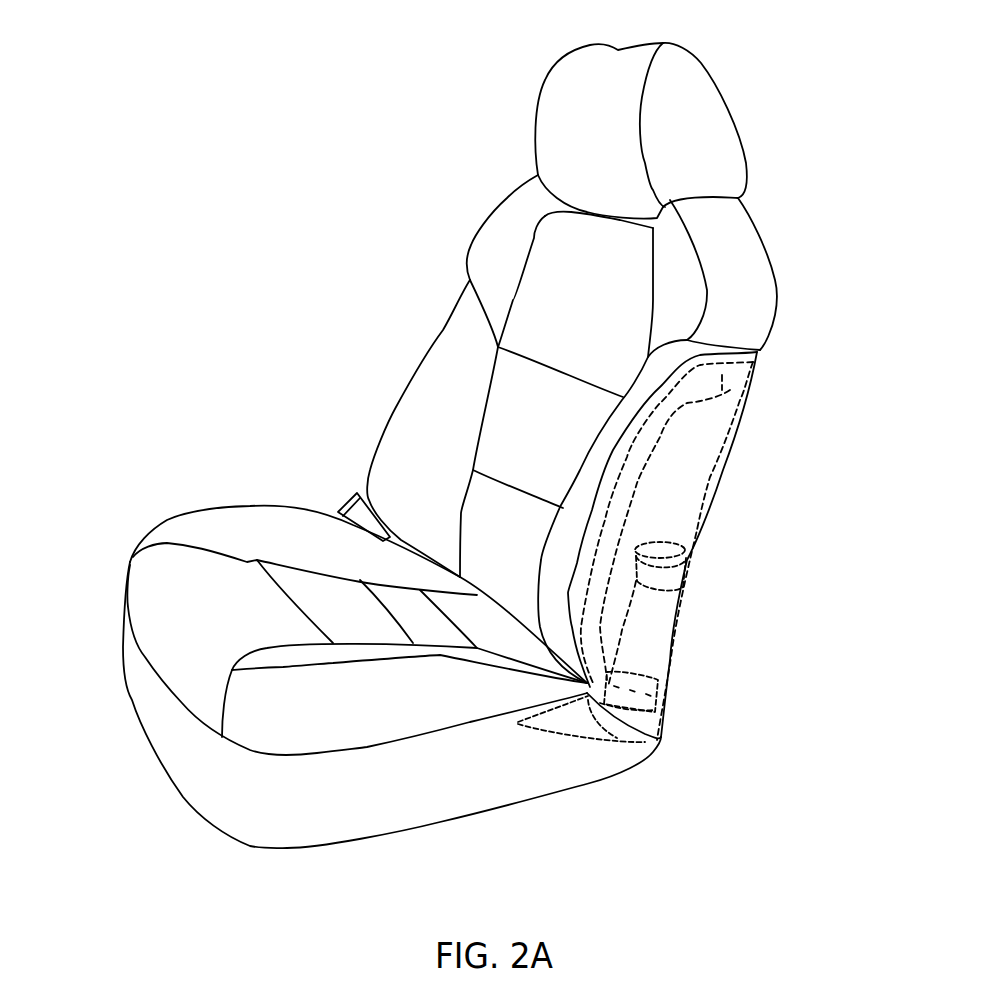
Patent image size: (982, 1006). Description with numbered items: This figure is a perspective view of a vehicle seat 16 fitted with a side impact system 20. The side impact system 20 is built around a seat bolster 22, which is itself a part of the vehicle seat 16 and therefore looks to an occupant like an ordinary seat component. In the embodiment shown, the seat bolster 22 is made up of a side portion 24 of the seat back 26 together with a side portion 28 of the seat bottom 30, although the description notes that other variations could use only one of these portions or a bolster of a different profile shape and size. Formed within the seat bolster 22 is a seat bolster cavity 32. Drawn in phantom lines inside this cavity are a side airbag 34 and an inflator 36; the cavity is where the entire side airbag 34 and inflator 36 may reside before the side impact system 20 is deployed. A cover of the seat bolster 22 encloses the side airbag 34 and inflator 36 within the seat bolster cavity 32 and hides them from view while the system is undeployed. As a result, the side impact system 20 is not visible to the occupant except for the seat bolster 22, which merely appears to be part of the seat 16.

The vehicle seat 16 is at (385, 338).
The side impact system 20 is at (705, 792).
The seat bolster 22 is at (697, 550).
The side portion of the seat back 24 is at (753, 362).
The seat back 26 is at (565, 275).
The side portion of the seat bottom 28 is at (480, 800).
The seat bottom 30 is at (158, 590).
The seat bolster cavity 32 is at (720, 390).
The side airbag 34 is at (703, 475).
The inflator 36 is at (658, 630).